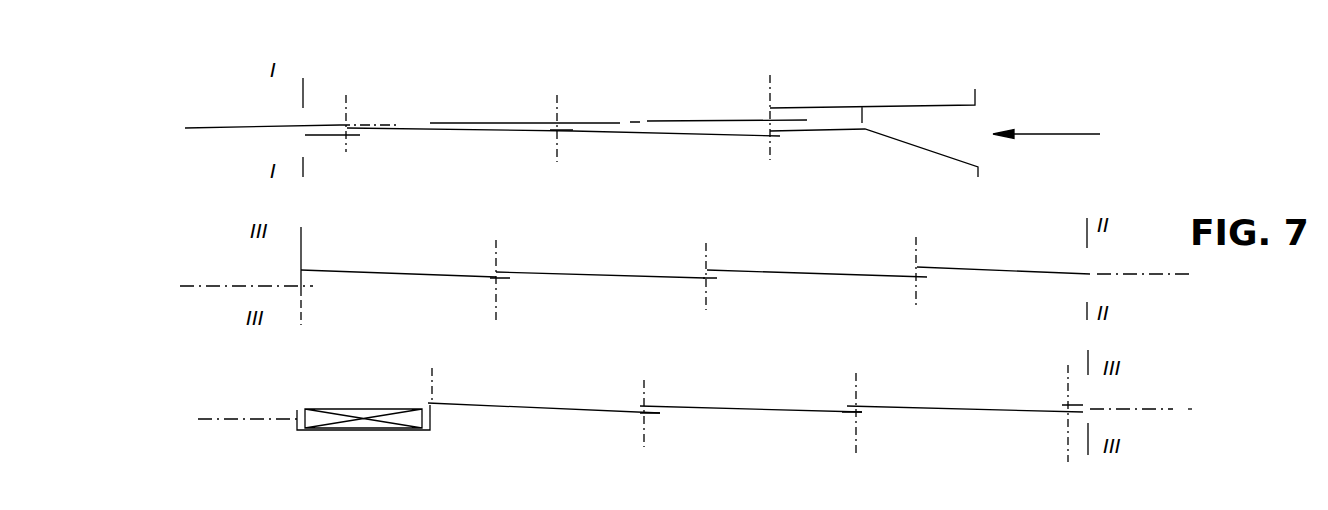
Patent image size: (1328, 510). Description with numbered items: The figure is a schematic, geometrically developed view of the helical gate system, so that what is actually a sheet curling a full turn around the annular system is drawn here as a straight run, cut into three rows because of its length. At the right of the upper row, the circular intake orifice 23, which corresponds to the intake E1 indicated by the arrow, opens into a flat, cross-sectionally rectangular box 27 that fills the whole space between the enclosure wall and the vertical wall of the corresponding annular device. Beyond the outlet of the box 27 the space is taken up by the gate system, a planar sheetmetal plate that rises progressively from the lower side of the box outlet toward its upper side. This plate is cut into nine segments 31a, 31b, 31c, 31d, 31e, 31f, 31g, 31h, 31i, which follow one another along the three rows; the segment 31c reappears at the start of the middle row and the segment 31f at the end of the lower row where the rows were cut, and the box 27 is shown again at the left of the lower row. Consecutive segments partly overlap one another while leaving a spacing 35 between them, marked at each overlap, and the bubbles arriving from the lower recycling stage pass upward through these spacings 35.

The intake orifice 23 is at (983, 117).
The box 27 is at (798, 115).
The segment 31a is at (657, 133).
The segment 31b is at (455, 123).
The segment 31c is at (322, 135).
The segment 31d is at (793, 272).
The segment 31e is at (585, 273).
The segment 31f is at (378, 272).
The segment 31g is at (920, 407).
The segment 31h is at (718, 407).
The segment 31i is at (528, 408).
The spacing 35 is at (360, 131).
The intake E1 is at (1048, 122).